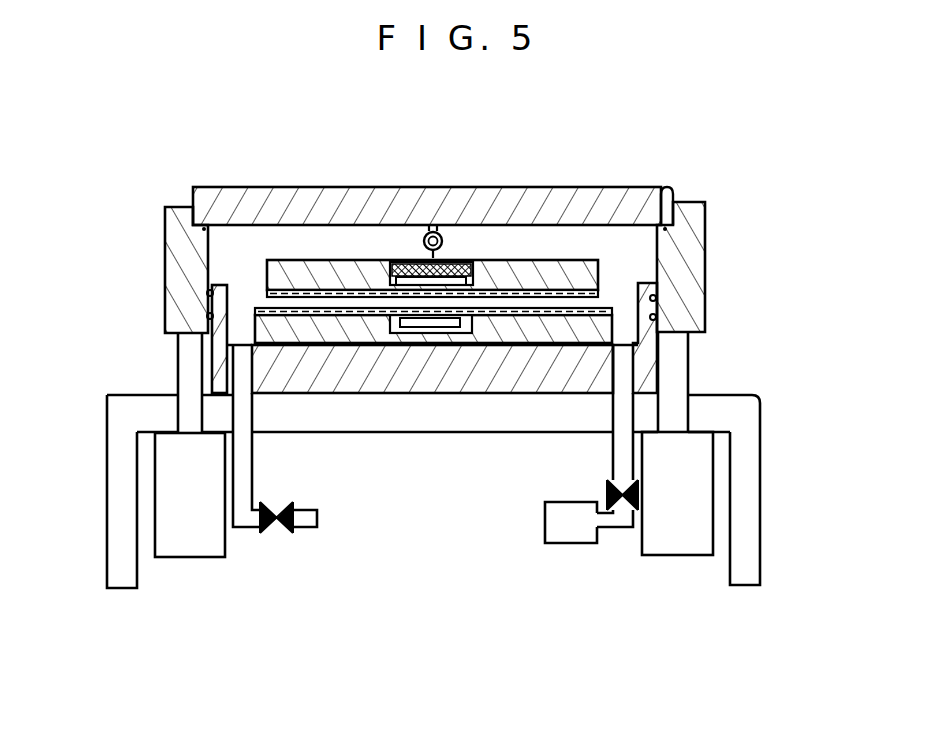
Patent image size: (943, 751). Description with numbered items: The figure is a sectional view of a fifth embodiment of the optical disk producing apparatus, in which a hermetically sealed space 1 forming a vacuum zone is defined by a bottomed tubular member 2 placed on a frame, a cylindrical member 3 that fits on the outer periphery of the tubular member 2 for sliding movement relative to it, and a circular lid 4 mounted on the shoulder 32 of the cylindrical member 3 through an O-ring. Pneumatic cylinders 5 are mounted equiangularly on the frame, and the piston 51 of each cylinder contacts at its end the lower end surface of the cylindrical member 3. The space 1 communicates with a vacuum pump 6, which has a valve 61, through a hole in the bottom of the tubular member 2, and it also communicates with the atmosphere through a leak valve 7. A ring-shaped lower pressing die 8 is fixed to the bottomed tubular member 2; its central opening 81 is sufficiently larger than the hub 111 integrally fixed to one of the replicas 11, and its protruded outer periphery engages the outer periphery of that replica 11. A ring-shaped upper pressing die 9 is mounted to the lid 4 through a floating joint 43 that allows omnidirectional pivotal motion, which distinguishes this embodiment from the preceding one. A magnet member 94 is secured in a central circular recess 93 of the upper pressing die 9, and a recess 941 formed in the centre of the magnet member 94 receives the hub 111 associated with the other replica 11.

The hermetically sealed space 1 is at (248, 268).
The bottomed tubular member 2 is at (291, 366).
The cylindrical member 3 is at (707, 238).
The circular lid 4 is at (624, 184).
The pneumatic cylinders 5 is at (190, 560).
The vacuum pump 6 is at (570, 545).
The leak valve 7 is at (279, 536).
The lower pressing die 8 is at (514, 337).
The upper pressing die 9 is at (287, 268).
The replicas 11 is at (355, 296).
The shoulder 32 is at (666, 207).
The floating joint 43 is at (441, 252).
The piston 51 is at (178, 368).
The valve 61 is at (609, 484).
The central opening 81 is at (394, 333).
The central circular recess 93 is at (388, 276).
The magnet member 94 is at (398, 284).
The hub 111 is at (443, 293).
The recess 941 is at (478, 275).